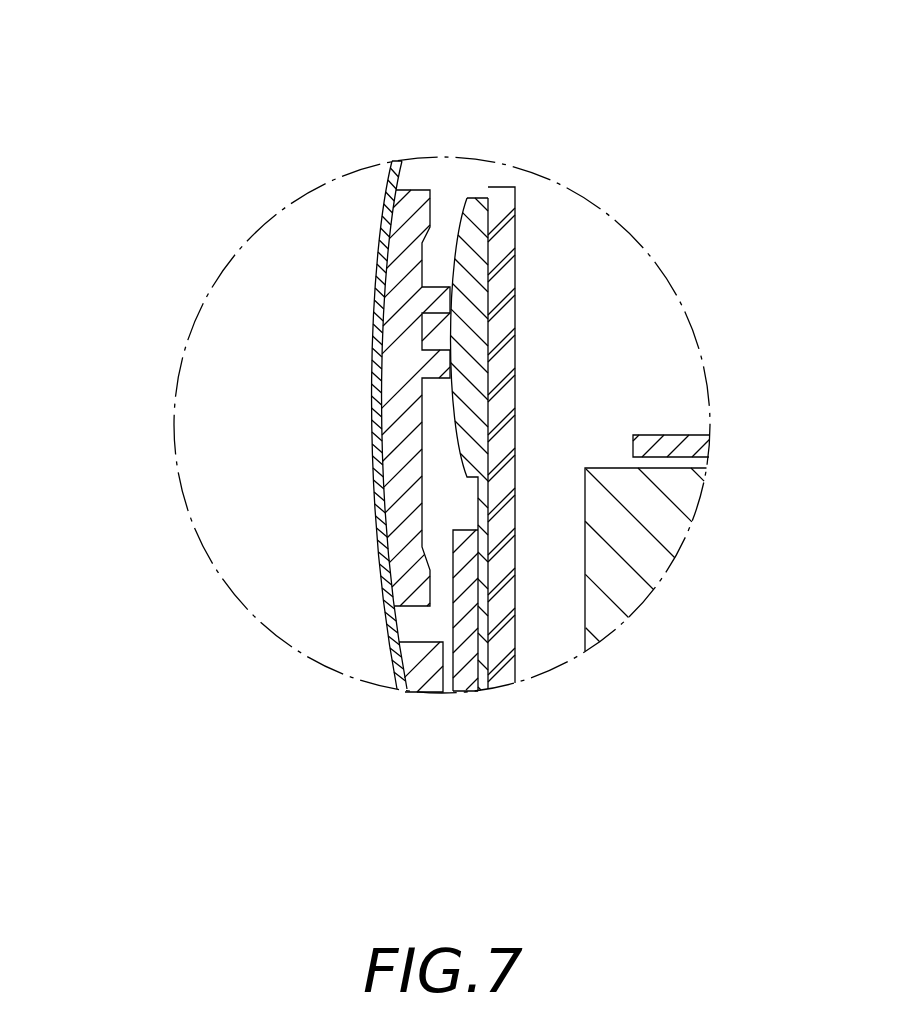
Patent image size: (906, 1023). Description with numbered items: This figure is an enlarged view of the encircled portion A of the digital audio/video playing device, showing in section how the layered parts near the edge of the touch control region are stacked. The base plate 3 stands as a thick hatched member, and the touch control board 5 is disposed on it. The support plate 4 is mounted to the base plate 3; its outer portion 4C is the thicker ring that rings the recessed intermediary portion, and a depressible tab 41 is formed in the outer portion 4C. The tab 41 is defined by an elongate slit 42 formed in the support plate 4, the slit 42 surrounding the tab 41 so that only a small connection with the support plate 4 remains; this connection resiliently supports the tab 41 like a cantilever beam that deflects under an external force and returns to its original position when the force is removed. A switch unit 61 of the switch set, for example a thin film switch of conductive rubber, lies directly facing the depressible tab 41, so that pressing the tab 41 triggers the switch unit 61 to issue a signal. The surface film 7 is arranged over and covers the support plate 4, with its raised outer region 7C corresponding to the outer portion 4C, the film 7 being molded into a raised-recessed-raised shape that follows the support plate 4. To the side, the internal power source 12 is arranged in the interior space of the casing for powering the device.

The switch unit 61 is at (480, 222).
The base plate 3 is at (502, 239).
The encircled portion A is at (646, 256).
The surface film 7 is at (214, 425).
The depressible tab 41 is at (416, 398).
The outer portion 4C is at (390, 407).
The raised outer region 7C is at (373, 487).
The elongate slit 42 is at (410, 623).
The support plate 4 is at (244, 529).
The touch control board 5 is at (467, 673).
The internal power source 12 is at (618, 600).